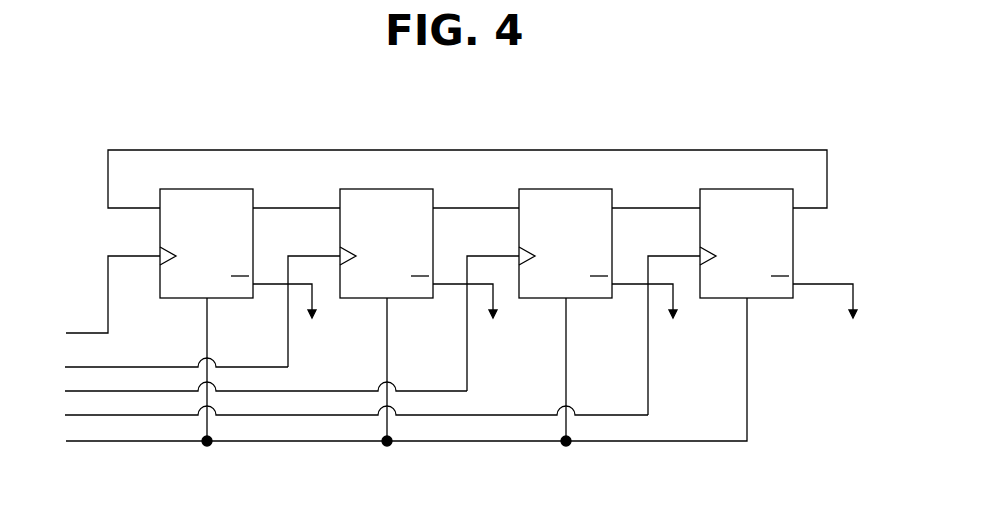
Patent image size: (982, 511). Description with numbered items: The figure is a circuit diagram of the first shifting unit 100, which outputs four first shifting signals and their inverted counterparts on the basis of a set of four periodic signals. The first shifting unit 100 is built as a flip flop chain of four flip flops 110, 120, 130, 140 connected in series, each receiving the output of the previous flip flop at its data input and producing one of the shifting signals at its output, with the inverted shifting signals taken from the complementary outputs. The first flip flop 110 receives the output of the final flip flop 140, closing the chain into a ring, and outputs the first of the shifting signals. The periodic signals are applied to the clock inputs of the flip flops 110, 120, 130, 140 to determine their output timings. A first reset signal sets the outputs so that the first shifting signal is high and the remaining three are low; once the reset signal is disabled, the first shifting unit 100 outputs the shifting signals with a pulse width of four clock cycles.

The first shifting unit 100 is at (828, 106).
The first flip flop 110 is at (230, 189).
The flip flop 120 is at (410, 189).
The flip flop 130 is at (589, 189).
The final flip flop 140 is at (770, 189).